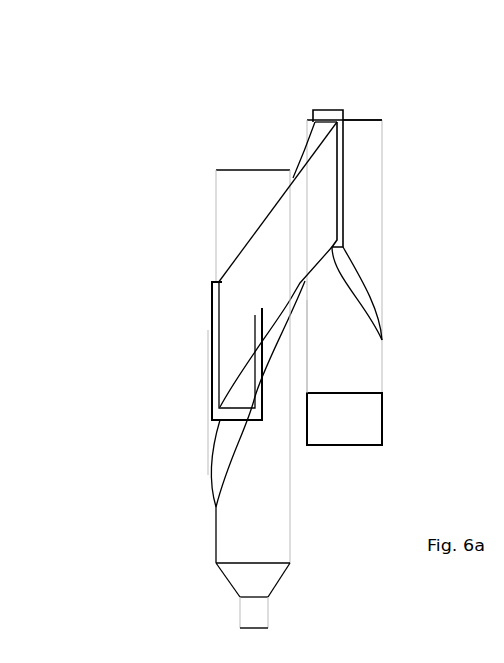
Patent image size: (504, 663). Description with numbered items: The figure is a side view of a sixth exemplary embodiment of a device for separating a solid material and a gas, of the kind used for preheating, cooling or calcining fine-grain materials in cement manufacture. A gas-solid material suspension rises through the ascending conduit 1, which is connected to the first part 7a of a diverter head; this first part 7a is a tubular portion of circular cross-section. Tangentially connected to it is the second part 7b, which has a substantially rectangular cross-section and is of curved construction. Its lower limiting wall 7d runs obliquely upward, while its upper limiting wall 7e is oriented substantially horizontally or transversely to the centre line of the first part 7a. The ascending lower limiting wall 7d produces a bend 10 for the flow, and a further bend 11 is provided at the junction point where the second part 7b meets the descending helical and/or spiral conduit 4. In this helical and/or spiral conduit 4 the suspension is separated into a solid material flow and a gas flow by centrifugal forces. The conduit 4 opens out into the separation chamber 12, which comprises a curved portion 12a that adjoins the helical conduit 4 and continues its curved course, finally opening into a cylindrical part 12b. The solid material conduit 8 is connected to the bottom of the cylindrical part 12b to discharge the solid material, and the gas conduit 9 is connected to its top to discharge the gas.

The ascending conduit 1 is at (373, 413).
The helical and/or spiral conduit 4 is at (297, 208).
The first part of the diverter head 7a is at (345, 363).
The second part of the diverter head 7b is at (365, 192).
The lower limiting wall 7d is at (345, 273).
The upper limiting wall 7e is at (363, 120).
The solid material conduit 8 is at (252, 611).
The gas conduit 9 is at (232, 195).
The bend 10 is at (403, 334).
The further bend 11 is at (304, 96).
The separation chamber 12 is at (194, 528).
The curved portion 12a is at (223, 442).
The cylindrical part 12b is at (260, 492).